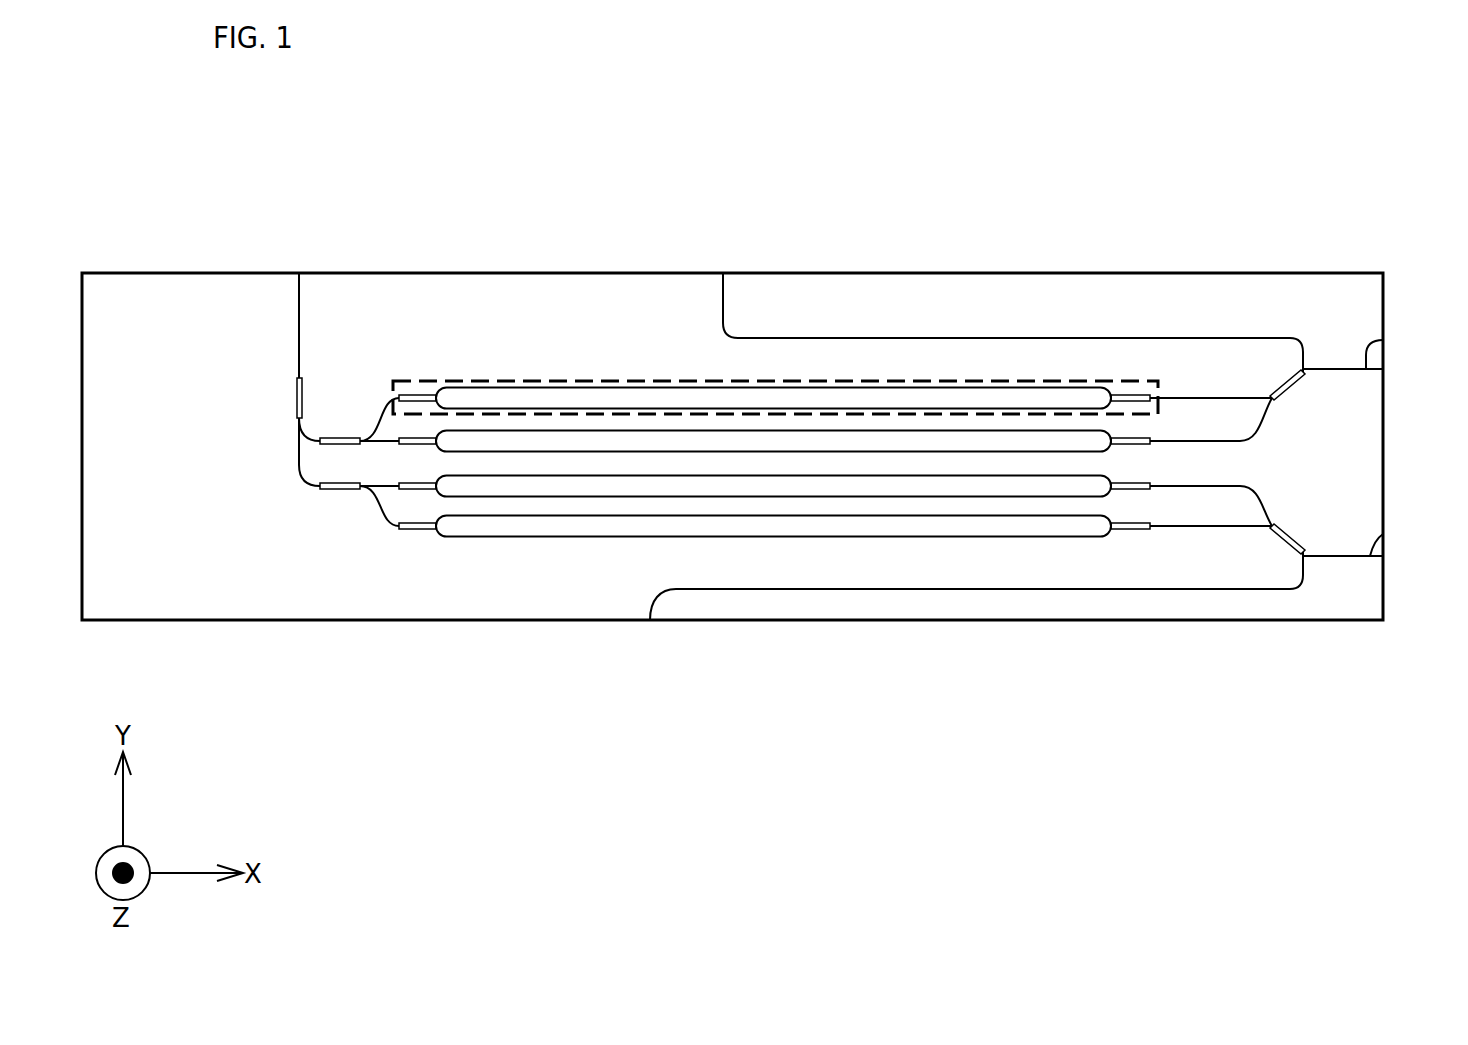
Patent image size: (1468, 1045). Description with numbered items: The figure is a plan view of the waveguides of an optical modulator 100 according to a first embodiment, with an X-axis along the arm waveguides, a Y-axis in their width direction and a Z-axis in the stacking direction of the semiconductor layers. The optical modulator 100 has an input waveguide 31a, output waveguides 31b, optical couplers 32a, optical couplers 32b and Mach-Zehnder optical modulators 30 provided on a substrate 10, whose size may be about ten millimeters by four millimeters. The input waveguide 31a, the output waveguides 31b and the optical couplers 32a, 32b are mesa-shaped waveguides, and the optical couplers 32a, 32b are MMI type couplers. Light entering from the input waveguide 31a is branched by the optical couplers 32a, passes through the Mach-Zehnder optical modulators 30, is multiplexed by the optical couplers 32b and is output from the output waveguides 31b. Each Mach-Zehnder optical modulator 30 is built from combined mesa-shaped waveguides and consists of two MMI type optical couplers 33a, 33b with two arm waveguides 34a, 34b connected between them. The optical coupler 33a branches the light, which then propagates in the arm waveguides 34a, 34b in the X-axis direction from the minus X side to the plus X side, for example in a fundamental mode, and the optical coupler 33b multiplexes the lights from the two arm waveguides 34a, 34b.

The optical modulator 100 is at (1377, 183).
The substrate 10 is at (1368, 449).
The Mach-Zehnder optical modulator 30 is at (790, 380).
The input waveguide 31a is at (299, 321).
The output waveguide 31b is at (1383, 342).
The optical coupler 32a is at (336, 528).
The optical coupler 32b is at (1288, 385).
The optical coupler 33a is at (410, 395).
The optical coupler 33b is at (1143, 395).
The arm waveguide 34a is at (659, 388).
The arm waveguide 34b is at (637, 405).